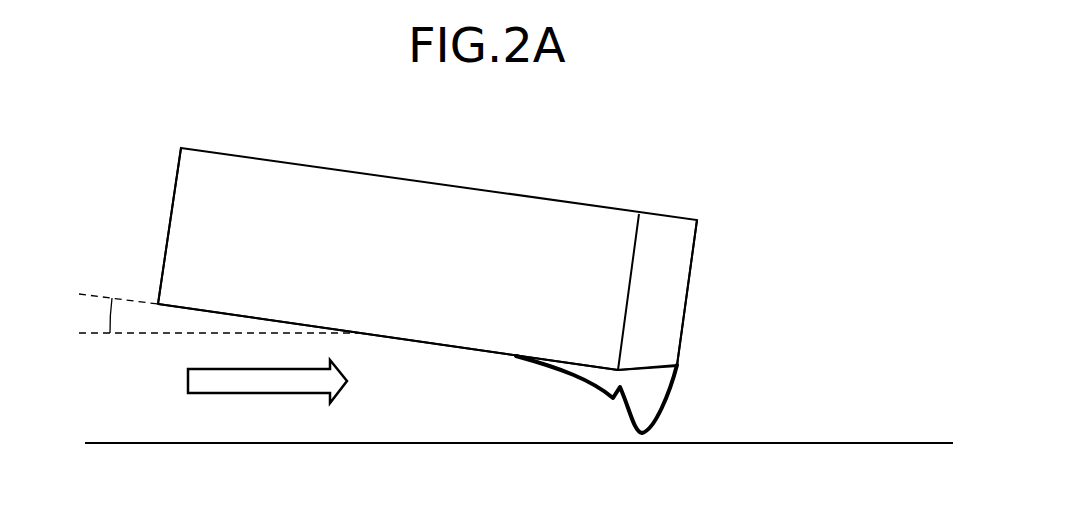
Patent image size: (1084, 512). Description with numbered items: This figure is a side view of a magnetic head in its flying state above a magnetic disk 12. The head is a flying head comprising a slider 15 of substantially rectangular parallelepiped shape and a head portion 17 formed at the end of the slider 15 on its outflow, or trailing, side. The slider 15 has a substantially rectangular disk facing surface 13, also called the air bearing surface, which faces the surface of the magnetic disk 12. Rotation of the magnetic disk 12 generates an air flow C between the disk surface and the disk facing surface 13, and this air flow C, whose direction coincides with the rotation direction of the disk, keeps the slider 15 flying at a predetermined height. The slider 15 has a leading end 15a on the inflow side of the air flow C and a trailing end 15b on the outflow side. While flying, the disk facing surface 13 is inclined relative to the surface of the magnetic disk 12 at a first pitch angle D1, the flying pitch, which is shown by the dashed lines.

The magnetic disk 12 is at (800, 442).
The disk facing surface 13 is at (357, 335).
The slider 15 is at (520, 213).
The leading end 15a is at (170, 208).
The trailing end 15b is at (693, 268).
The head portion 17 is at (665, 337).
The first pitch angle D1 is at (107, 317).
The air flow C is at (253, 395).